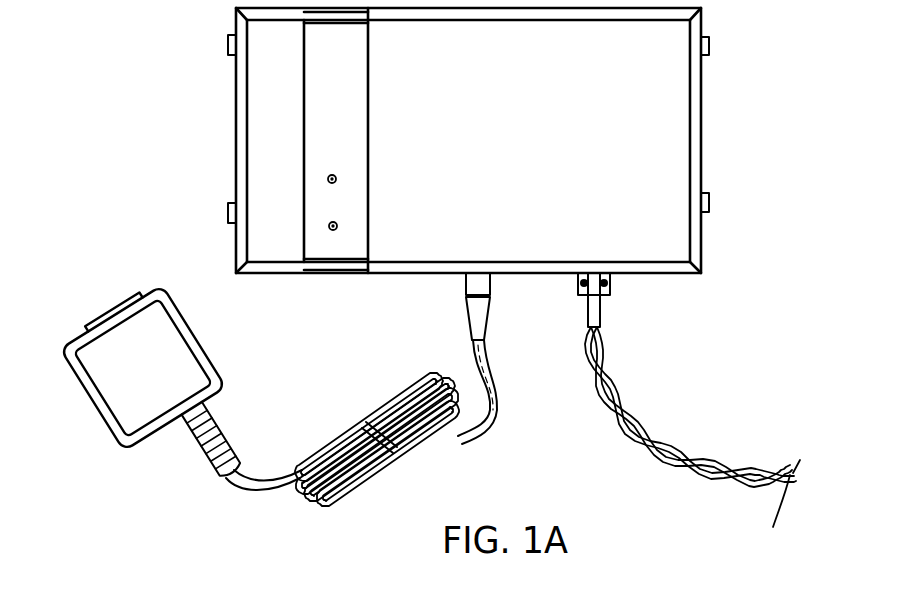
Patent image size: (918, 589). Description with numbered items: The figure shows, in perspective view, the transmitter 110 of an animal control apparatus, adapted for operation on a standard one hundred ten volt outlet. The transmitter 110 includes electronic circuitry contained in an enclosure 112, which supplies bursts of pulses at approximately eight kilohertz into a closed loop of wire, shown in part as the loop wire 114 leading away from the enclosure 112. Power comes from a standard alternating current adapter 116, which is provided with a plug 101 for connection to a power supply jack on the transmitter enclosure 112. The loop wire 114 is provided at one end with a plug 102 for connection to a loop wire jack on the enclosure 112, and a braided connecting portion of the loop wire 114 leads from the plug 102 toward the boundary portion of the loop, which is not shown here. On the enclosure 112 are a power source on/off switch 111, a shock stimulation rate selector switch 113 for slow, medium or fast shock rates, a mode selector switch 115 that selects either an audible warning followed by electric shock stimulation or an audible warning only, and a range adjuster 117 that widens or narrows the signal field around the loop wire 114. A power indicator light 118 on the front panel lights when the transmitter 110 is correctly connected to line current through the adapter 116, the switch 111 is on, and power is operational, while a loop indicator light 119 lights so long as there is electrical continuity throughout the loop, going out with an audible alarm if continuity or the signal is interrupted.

The transmitter 110 is at (720, 327).
The plug 101 is at (465, 283).
The plug 102 is at (612, 287).
The power source on/off switch 111 is at (228, 213).
The enclosure 112 is at (701, 131).
The shock stimulation rate selector switch 113 is at (228, 44).
The loop wire 114 is at (763, 468).
The mode selector switch 115 is at (709, 43).
The alternating current adapter 116 is at (221, 370).
The range adjuster 117 is at (709, 203).
The power indicator light 118 is at (338, 226).
The loop indicator light 119 is at (337, 178).